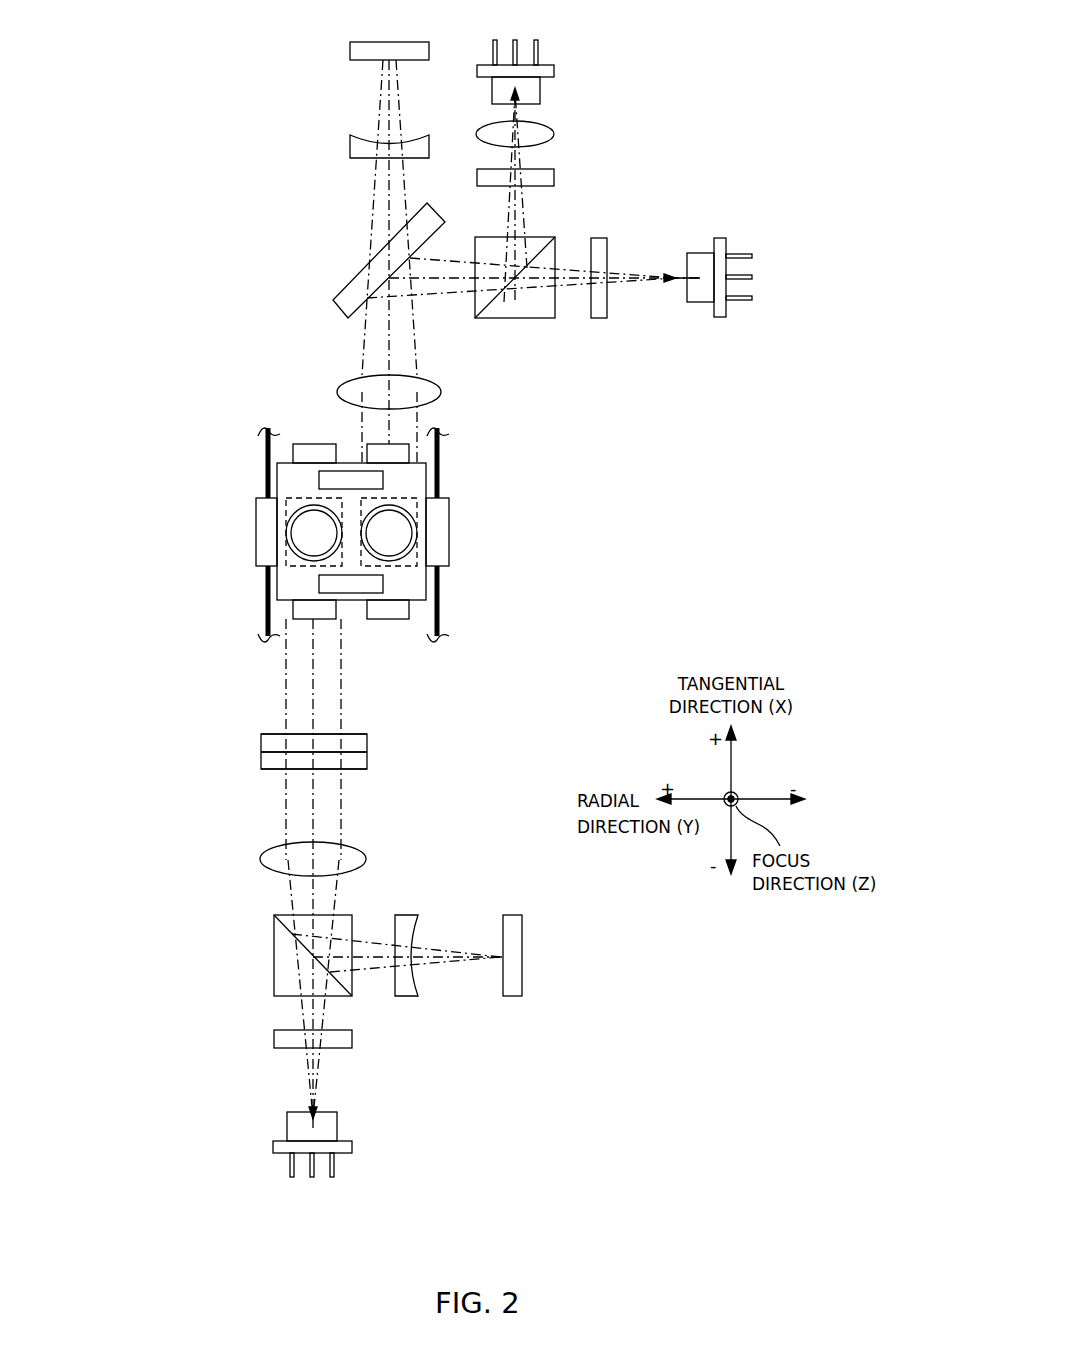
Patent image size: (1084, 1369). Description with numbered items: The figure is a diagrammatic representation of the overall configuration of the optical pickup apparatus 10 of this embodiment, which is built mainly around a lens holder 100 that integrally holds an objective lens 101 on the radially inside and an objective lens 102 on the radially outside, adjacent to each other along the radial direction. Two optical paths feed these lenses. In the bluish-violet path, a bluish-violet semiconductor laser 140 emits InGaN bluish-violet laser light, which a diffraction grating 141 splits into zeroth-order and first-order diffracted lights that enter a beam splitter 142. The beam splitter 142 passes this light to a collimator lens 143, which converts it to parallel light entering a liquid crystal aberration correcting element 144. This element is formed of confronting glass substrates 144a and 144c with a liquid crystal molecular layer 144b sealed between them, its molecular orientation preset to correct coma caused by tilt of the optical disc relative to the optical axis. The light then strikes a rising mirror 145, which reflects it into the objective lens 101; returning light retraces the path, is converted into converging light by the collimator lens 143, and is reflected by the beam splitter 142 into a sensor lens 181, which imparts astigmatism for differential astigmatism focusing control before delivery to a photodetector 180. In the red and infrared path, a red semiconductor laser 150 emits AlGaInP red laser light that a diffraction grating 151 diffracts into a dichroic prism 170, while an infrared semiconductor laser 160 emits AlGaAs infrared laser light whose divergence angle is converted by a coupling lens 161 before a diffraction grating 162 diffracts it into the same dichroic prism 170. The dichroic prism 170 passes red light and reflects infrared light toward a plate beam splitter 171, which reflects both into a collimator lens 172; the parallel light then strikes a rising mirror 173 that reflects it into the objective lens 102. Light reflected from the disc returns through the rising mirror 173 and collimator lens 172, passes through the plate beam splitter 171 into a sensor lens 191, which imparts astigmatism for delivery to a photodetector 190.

The optical pickup apparatus 10 is at (166, 910).
The lens holder 100 is at (426, 585).
The objective lens 101 is at (308, 502).
The objective lens 102 is at (394, 502).
The bluish-violet semiconductor laser 140 is at (273, 1145).
The diffraction grating 141 is at (274, 1039).
The beam splitter 142 is at (274, 950).
The collimator lens 143 is at (265, 852).
The liquid crystal aberration correcting element 144 is at (242, 753).
The glass substrate 144a is at (367, 762).
The liquid crystal molecular layer 144b is at (367, 752).
The glass substrate 144c is at (367, 740).
The rising mirror 145 is at (300, 568).
The red semiconductor laser 150 is at (716, 317).
The diffraction grating 151 is at (597, 318).
The infrared semiconductor laser 160 is at (554, 71).
The coupling lens 161 is at (554, 132).
The diffraction grating 162 is at (554, 178).
The dichroic prism 170 is at (520, 318).
The plate beam splitter 171 is at (341, 303).
The collimator lens 172 is at (345, 386).
The rising mirror 173 is at (417, 548).
The photodetector 180 is at (512, 996).
The sensor lens 181 is at (406, 996).
The photodetector 190 is at (350, 50).
The sensor lens 191 is at (350, 148).